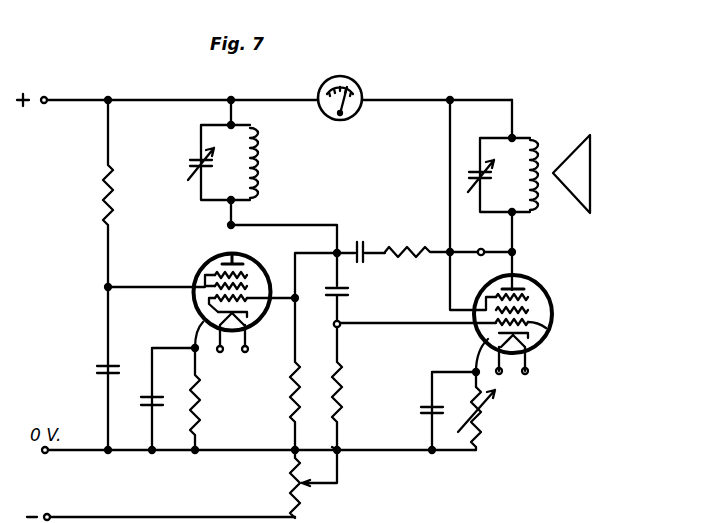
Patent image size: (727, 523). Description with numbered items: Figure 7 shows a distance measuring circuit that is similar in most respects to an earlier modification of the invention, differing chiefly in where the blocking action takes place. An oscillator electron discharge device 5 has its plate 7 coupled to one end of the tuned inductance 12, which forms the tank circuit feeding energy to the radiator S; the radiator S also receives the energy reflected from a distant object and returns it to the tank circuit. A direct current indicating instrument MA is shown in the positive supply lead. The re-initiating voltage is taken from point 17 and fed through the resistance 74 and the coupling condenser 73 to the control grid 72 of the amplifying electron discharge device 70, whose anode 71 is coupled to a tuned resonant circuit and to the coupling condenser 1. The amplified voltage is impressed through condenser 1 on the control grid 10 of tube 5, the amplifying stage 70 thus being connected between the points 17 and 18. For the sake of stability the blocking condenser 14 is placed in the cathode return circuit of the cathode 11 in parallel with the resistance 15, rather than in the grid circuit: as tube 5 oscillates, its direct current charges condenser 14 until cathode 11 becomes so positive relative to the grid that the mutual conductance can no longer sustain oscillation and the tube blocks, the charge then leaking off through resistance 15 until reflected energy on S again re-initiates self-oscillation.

The coupling condenser 1 is at (351, 291).
The electron discharge device 5 is at (540, 286).
The plate 7 is at (546, 296).
The control grid 10 is at (546, 329).
The cathode 11 is at (538, 351).
The inductance 12 is at (513, 162).
The blocking condenser 14 is at (422, 417).
The resistance 15 is at (483, 413).
The point 17 is at (482, 230).
The point 18 is at (342, 328).
The electron discharge device 70 is at (197, 313).
The anode 71 is at (217, 272).
The control grid 72 is at (252, 298).
The coupling condenser 73 is at (363, 241).
The resistance 74 is at (390, 247).
The milliammeter MA is at (337, 120).
The radiator S is at (556, 195).